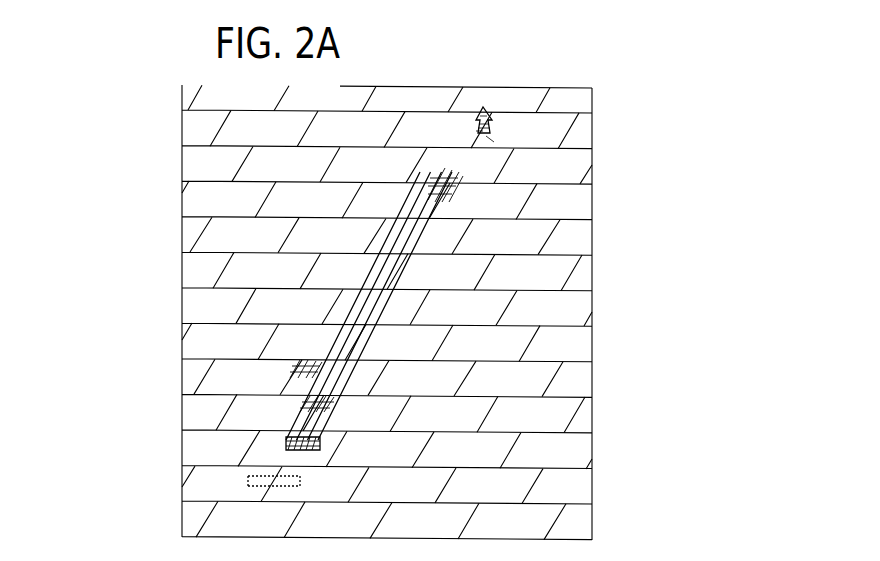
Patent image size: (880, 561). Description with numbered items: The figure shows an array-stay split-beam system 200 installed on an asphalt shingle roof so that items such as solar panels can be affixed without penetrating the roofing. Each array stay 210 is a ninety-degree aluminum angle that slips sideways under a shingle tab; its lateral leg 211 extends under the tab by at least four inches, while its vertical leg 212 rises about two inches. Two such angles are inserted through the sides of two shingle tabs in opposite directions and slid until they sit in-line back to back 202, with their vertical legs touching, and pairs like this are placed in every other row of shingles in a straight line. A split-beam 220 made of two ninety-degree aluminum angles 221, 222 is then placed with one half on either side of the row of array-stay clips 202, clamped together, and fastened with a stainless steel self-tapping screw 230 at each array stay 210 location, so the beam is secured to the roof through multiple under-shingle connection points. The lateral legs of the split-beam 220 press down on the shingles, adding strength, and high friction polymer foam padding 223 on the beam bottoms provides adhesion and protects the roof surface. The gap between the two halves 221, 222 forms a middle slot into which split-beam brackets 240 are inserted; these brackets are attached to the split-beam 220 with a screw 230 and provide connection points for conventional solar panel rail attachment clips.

The array-stay split-beam system 200 is at (512, 100).
The array-stay clips in-line back to back 202 is at (466, 192).
The array stay 210 is at (477, 118).
The lateral leg 211 is at (494, 140).
The vertical leg 212 is at (481, 129).
The split-beam 220 is at (428, 306).
The first half of the split-beam 221 is at (400, 233).
The second half of the split-beam 222 is at (433, 229).
The high friction polymer foam padding 223 is at (286, 447).
The stainless steel self-tapping screw 230 is at (325, 392).
The split-beam bracket 240 is at (317, 366).